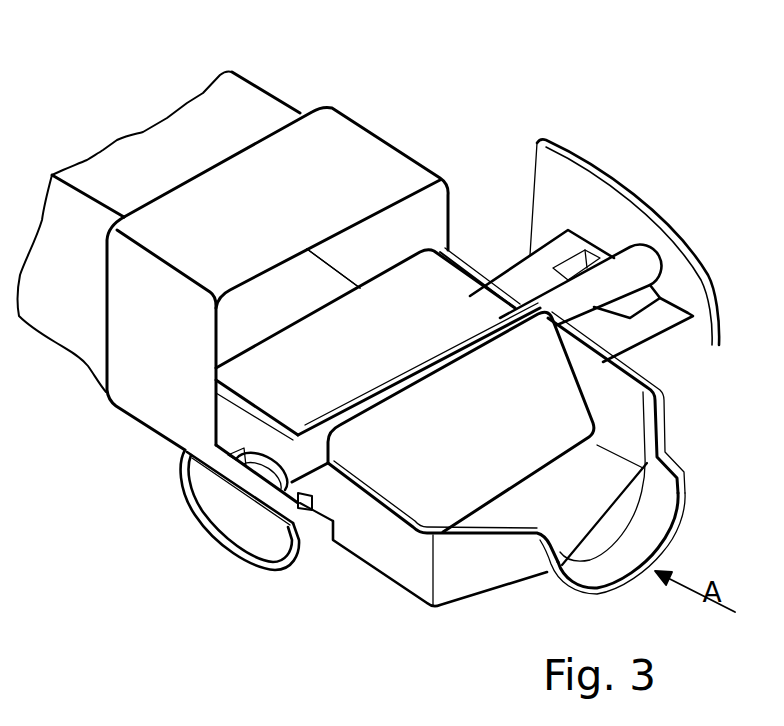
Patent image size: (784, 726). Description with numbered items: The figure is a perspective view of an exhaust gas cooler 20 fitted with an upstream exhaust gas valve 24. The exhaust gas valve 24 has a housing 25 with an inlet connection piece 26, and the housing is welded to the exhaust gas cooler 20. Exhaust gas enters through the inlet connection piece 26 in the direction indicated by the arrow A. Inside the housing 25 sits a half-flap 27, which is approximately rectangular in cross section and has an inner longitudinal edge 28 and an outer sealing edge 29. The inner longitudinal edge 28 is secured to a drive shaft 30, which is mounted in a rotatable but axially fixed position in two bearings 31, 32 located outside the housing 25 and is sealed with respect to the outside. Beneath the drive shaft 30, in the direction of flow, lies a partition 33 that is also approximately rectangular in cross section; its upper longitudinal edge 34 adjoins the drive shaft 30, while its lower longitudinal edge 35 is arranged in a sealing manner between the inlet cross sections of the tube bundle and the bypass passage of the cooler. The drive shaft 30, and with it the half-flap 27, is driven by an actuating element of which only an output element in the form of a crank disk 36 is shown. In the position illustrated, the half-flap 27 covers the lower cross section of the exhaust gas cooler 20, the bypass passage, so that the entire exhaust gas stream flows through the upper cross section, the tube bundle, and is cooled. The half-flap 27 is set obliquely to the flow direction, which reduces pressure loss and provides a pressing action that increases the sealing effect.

The exhaust gas cooler 20 is at (388, 128).
The exhaust gas valve 24 is at (360, 560).
The housing 25 is at (665, 430).
The inlet connection piece 26 is at (650, 527).
The half-flap 27 is at (467, 437).
The longitudinal edge 28 is at (495, 340).
The outer sealing edge 29 is at (500, 500).
The drive shaft 30 is at (636, 262).
The bearing 31 is at (645, 323).
The bearing 32 is at (335, 492).
The partition 33 is at (450, 292).
The upper longitudinal edge 34 is at (425, 360).
The lower longitudinal edge 35 is at (288, 323).
The crank disk 36 is at (590, 165).